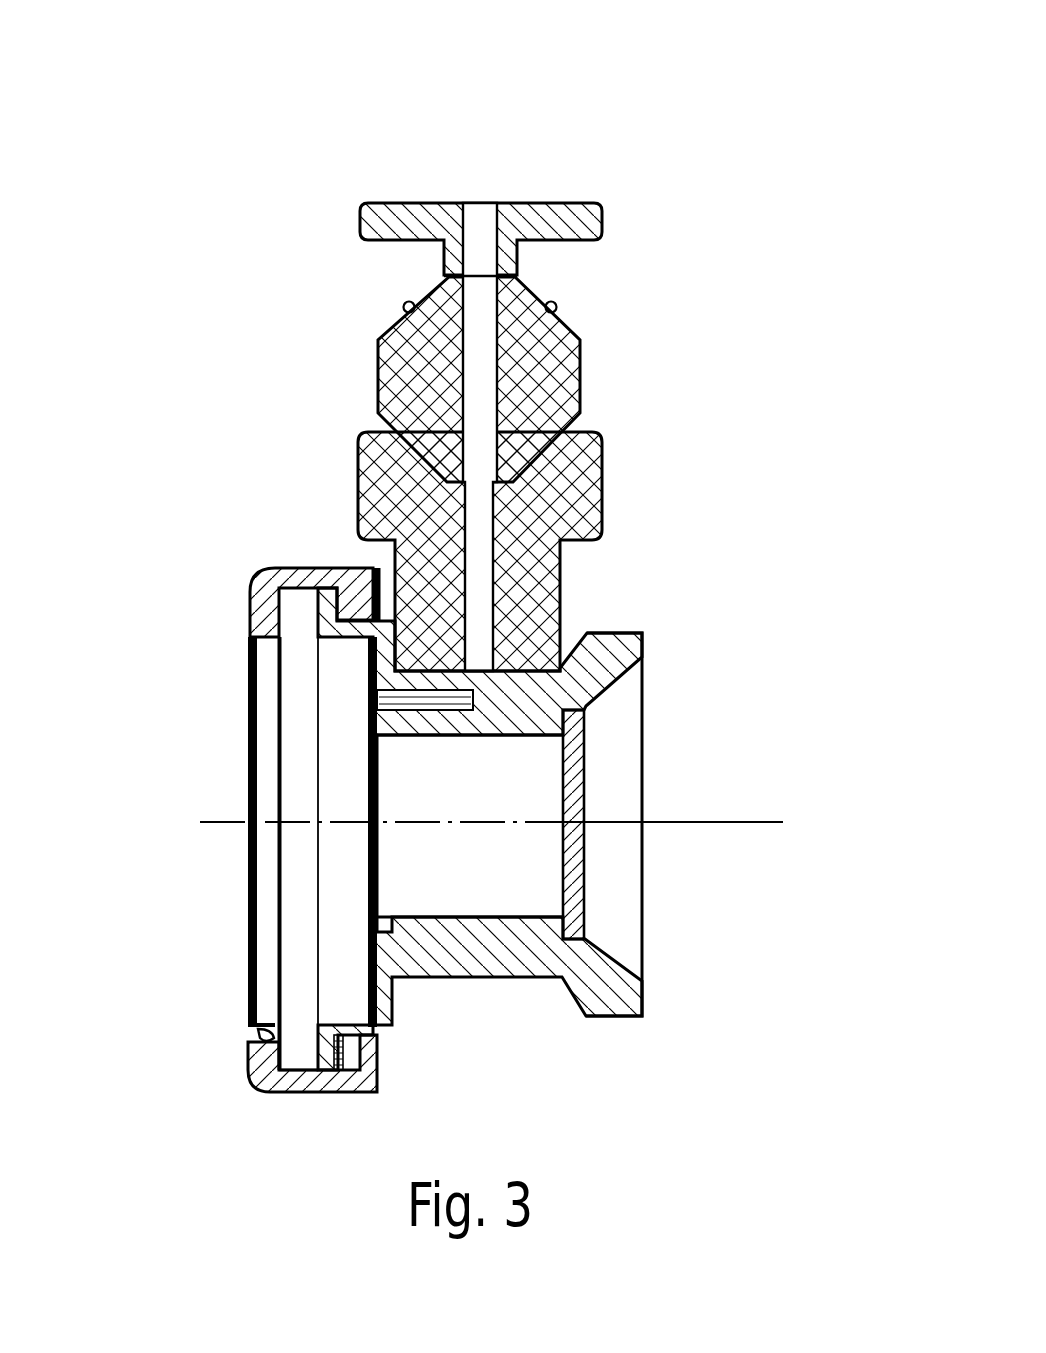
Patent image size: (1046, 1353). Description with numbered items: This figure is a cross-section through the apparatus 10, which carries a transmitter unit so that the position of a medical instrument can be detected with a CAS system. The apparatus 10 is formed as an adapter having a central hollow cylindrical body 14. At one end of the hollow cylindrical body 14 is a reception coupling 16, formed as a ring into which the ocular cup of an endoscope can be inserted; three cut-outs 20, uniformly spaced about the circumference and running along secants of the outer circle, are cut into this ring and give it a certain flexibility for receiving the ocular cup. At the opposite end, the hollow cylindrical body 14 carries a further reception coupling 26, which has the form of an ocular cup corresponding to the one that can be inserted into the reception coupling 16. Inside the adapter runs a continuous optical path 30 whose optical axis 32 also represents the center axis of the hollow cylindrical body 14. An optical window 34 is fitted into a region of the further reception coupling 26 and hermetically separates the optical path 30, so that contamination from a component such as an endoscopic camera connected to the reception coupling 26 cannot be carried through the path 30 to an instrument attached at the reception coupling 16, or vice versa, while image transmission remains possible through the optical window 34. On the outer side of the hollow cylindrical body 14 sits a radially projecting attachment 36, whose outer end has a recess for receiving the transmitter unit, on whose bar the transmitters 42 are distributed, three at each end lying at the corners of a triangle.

The apparatus 10 is at (491, 574).
The hollow cylindrical body 14 is at (482, 952).
The reception coupling 16 is at (266, 590).
The cut-outs 20 is at (257, 1035).
The further reception coupling 26 is at (627, 657).
The optical path 30 is at (410, 872).
The optical axis 32 is at (750, 822).
The optical window 34 is at (573, 763).
The radially projecting attachment 36 is at (566, 578).
The transmitters 42 is at (405, 305).